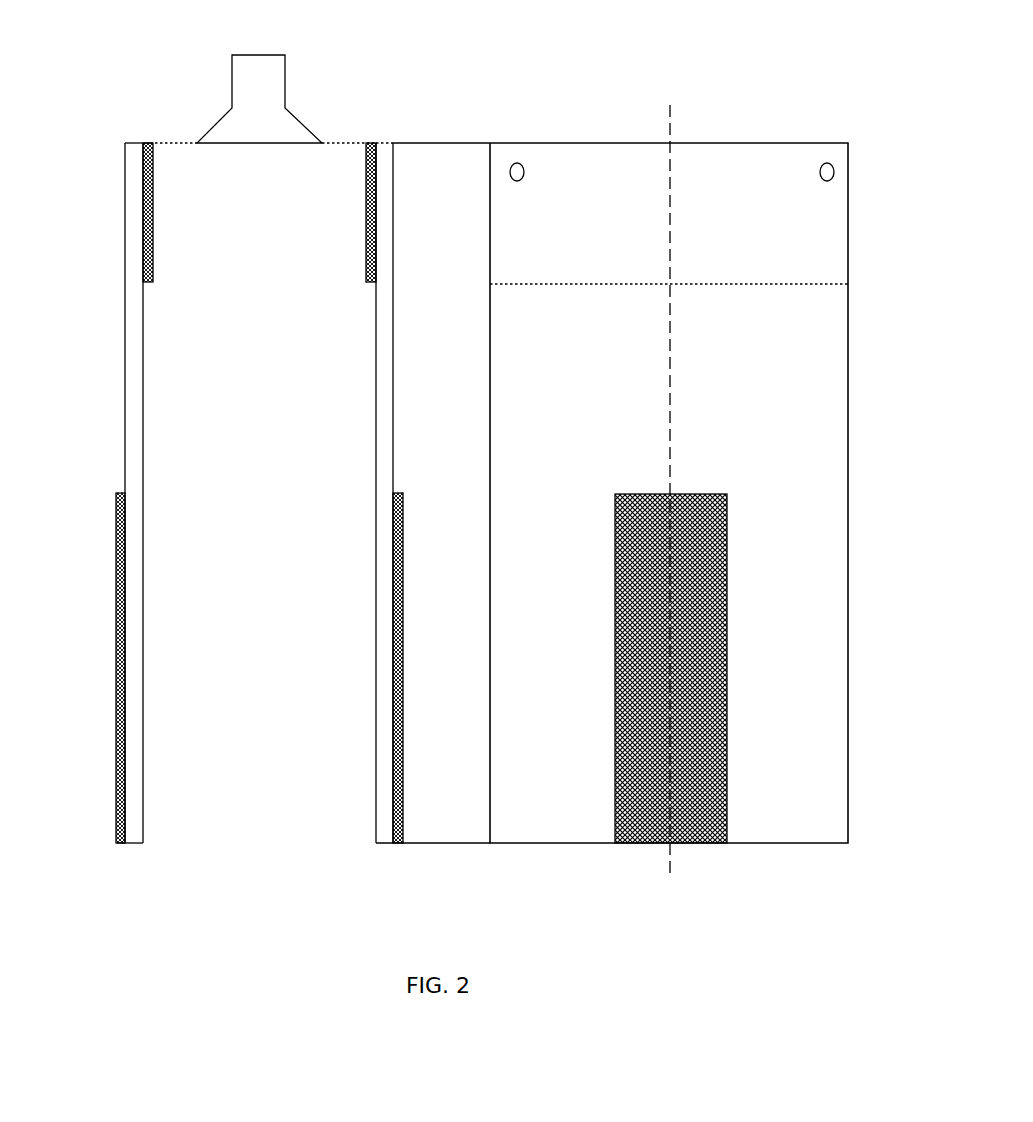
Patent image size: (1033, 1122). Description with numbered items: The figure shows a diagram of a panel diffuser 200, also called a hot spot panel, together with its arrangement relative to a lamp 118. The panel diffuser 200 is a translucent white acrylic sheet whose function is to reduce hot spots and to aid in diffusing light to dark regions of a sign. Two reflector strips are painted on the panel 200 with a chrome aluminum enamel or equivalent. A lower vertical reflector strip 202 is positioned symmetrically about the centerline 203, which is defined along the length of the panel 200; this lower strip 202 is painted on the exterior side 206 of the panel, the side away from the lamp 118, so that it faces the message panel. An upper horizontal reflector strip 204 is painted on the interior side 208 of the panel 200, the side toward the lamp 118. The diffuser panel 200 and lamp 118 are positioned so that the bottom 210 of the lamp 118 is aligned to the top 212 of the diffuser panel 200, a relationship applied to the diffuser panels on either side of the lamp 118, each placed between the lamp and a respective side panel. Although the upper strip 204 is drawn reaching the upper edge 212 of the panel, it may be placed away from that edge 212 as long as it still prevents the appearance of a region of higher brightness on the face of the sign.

The lamp 118 is at (243, 55).
The panel diffuser 200 is at (548, 143).
The lower vertical reflector strip 202 is at (122, 843).
The centerline 203 is at (668, 105).
The upper horizontal reflector strip 204 is at (153, 215).
The exterior side 206 is at (125, 430).
The interior side 208 is at (145, 362).
The bottom of the lamp 210 is at (327, 143).
The top of the diffuser panel 212 is at (386, 143).